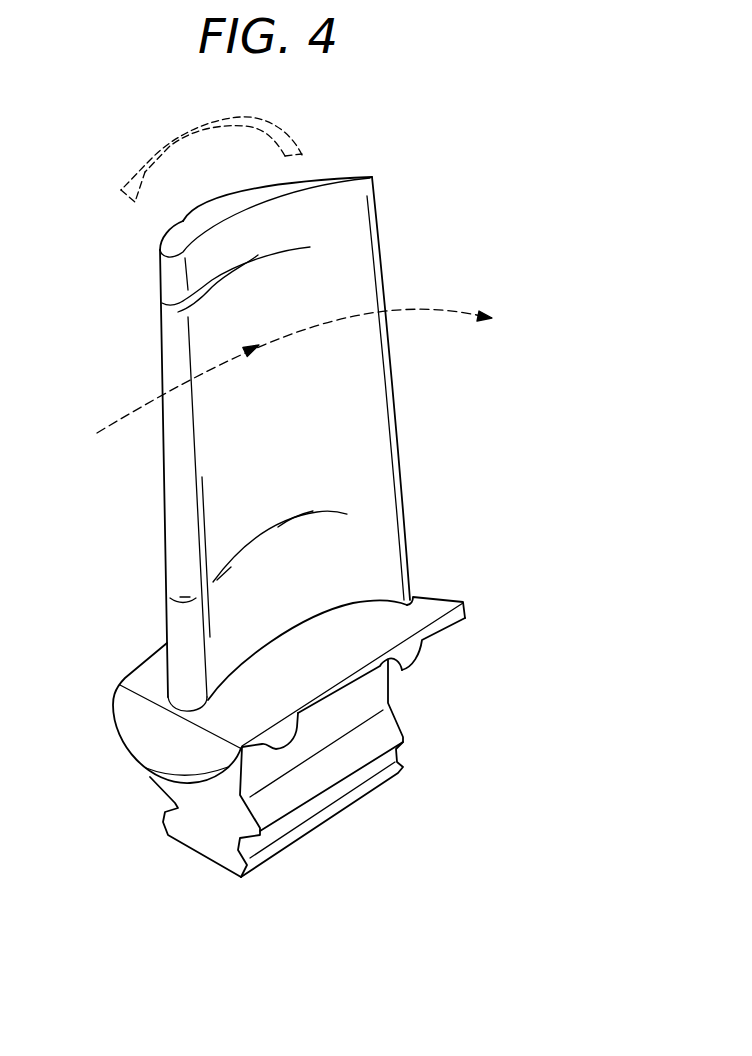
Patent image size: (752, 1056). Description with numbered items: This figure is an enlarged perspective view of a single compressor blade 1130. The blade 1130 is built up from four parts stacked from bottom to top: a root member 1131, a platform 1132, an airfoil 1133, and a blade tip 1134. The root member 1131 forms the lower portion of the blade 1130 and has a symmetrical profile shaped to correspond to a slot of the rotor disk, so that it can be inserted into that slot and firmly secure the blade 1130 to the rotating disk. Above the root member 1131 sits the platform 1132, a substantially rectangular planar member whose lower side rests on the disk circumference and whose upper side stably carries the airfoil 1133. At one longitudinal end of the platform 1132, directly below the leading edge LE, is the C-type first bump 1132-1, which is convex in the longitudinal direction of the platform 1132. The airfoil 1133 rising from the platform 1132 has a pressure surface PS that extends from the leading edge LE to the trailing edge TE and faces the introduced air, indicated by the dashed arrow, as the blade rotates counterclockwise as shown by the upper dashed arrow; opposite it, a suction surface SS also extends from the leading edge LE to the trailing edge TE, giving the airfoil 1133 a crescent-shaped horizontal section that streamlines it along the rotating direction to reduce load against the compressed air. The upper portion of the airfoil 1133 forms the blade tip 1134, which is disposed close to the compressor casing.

The blade 1130 is at (413, 95).
The root member 1131 is at (202, 832).
The platform 1132 is at (378, 625).
The first bump 1132-1 is at (137, 722).
The airfoil 1133 is at (427, 445).
The blade tip 1134 is at (187, 232).
The leading edge LE is at (165, 485).
The trailing edge TE is at (393, 388).
The pressure surface PS is at (298, 437).
The suction surface SS is at (328, 178).